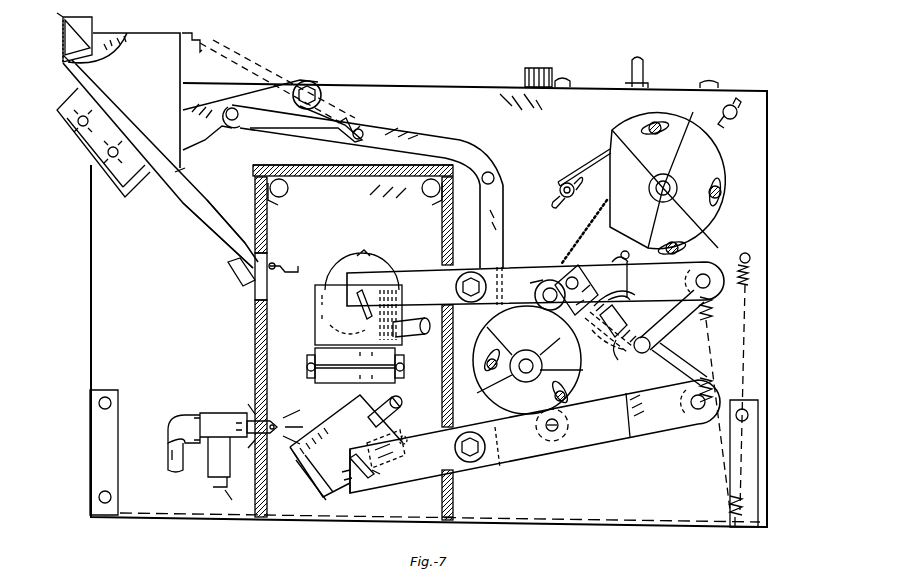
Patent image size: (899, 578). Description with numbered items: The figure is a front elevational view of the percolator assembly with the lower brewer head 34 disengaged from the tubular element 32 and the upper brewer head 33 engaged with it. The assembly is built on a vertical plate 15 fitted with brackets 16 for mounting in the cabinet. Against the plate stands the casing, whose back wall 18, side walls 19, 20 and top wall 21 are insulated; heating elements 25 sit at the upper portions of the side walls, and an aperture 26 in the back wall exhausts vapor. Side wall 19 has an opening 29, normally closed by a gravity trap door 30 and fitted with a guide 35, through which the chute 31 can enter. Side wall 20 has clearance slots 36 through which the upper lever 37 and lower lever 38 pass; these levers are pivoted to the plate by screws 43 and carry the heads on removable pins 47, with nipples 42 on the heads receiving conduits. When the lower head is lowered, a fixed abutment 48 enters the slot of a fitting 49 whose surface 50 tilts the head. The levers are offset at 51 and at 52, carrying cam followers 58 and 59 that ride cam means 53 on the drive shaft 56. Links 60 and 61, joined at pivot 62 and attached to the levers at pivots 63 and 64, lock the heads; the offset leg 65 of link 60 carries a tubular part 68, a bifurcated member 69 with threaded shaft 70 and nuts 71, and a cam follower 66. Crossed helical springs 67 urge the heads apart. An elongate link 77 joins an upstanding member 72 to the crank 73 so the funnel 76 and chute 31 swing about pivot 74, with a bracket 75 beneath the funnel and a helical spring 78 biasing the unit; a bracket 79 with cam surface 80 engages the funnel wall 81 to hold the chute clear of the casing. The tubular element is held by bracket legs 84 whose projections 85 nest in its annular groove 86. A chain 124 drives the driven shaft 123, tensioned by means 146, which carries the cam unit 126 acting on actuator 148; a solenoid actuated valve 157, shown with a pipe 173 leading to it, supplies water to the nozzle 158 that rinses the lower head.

The vertical plate 15 is at (768, 150).
The brackets 16 is at (760, 447).
The back wall 18 is at (379, 185).
The side wall 19 is at (254, 333).
The side wall 20 is at (454, 506).
The top wall 21 is at (335, 166).
The heating elements 25 is at (411, 192).
The aperture 26 is at (372, 252).
The opening 29 is at (254, 294).
The trap door 30 is at (292, 262).
The chute 31 is at (186, 202).
The tubular element 32 is at (330, 384).
The upper brewer head 33 is at (315, 303).
The lower brewer head 34 is at (308, 484).
The guide 35 is at (236, 280).
The clearance slots 36 is at (454, 486).
The upper lever 37 is at (437, 272).
The lower lever 38 is at (430, 468).
The nipples 42 is at (402, 404).
The screws 43 is at (470, 462).
The removable pin 47 is at (358, 482).
The fixed abutment 48 is at (410, 446).
The fitting 49 is at (384, 474).
The surface 50 is at (398, 460).
The rearward offset 51 is at (516, 270).
The forward offset 52 is at (598, 430).
The cam means 53 is at (490, 340).
The drive shaft 56 is at (532, 360).
The cam follower 58 is at (530, 277).
The cam follower 59 is at (554, 444).
The link 60 is at (676, 326).
The link 61 is at (680, 374).
The pivot 62 is at (652, 348).
The pivot 63 is at (710, 274).
The pivot 64 is at (688, 418).
The offset leg 65 is at (634, 324).
The cam follower 66 is at (588, 278).
The helical springs 67 is at (722, 333).
The tubular part 68 is at (610, 338).
The bifurcated member 69 is at (566, 310).
The threaded shaft 70 is at (614, 352).
The nuts 71 is at (634, 298).
The upstanding member 72 is at (504, 207).
The crank 73 is at (312, 82).
The pivot 74 is at (322, 97).
The bracket 75 is at (80, 146).
The funnel 76 is at (183, 71).
The elongate link 77 is at (445, 138).
The helical spring 78 is at (240, 64).
The bracket 79 is at (62, 15).
The cam surface 80 is at (64, 52).
The wall 81 is at (63, 37).
The legs 84 is at (404, 380).
The projections 85 is at (408, 365).
The annular groove 86 is at (352, 382).
The driven shaft 123 is at (660, 190).
The chain 124 is at (596, 224).
The cam unit 126 is at (728, 138).
The adjusting means 146 is at (622, 264).
The actuator 148 is at (603, 152).
The solenoid actuated valve 157 is at (228, 413).
The nozzle 158 is at (276, 420).
The pipe 173 is at (166, 457).